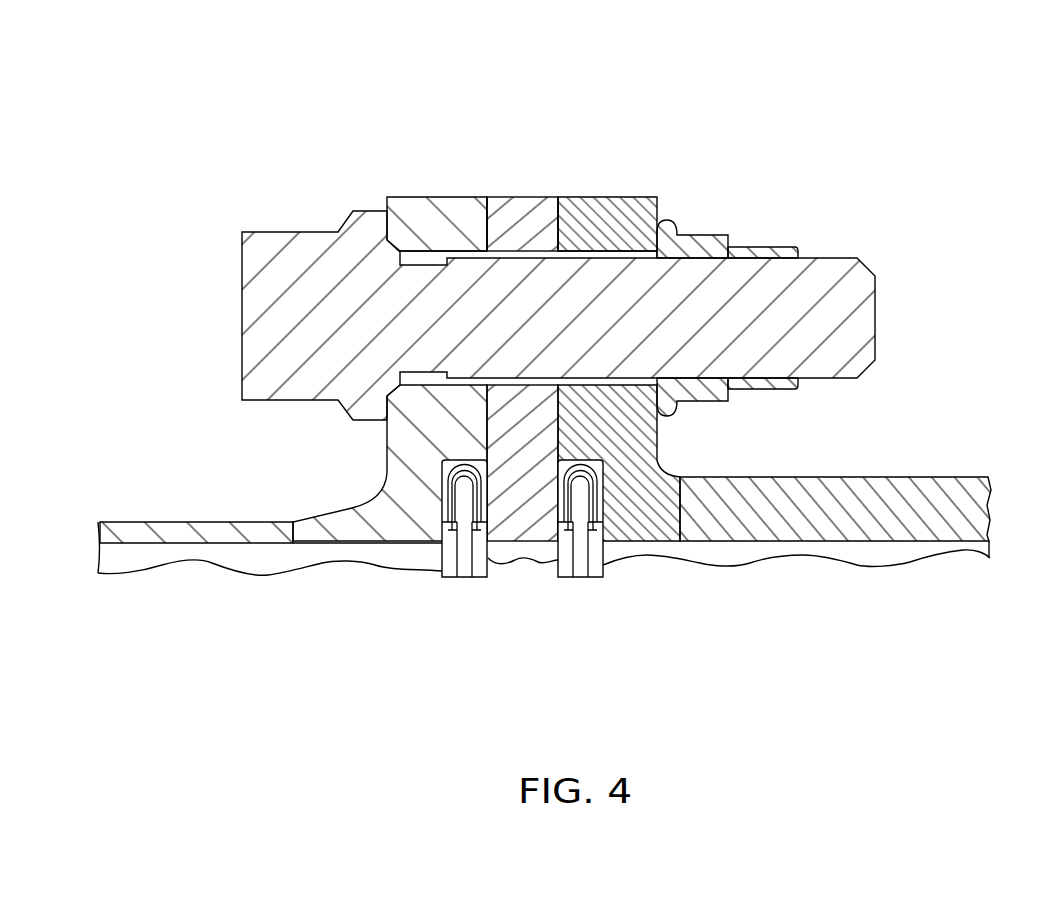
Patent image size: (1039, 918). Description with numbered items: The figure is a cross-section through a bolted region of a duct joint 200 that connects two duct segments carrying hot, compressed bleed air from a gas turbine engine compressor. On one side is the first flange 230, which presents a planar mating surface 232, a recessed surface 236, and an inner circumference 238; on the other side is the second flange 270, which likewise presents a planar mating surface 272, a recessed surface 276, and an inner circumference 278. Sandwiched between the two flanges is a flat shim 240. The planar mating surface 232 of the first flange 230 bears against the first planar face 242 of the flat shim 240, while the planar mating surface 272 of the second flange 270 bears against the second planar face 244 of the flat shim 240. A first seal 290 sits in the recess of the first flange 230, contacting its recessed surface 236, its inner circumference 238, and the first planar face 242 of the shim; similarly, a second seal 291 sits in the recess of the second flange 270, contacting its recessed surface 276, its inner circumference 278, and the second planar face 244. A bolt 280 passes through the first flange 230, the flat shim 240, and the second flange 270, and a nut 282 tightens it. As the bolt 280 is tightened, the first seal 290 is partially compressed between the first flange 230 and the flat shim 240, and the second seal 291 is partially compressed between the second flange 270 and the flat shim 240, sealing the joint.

The duct joint 200 is at (308, 85).
The first flange 230 is at (450, 197).
The planar mating surface 232 is at (497, 214).
The recessed surface 236 is at (437, 510).
The inner circumference 238 is at (458, 456).
The flat shim 240 is at (523, 197).
The first planar face 242 is at (474, 239).
The second planar face 244 is at (573, 240).
The second flange 270 is at (620, 197).
The planar mating surface 272 is at (547, 214).
The recessed surface 276 is at (607, 497).
The inner circumference 278 is at (597, 460).
The bolt 280 is at (292, 232).
The nut 282 is at (785, 247).
The first seal 290 is at (442, 558).
The second seal 291 is at (608, 562).